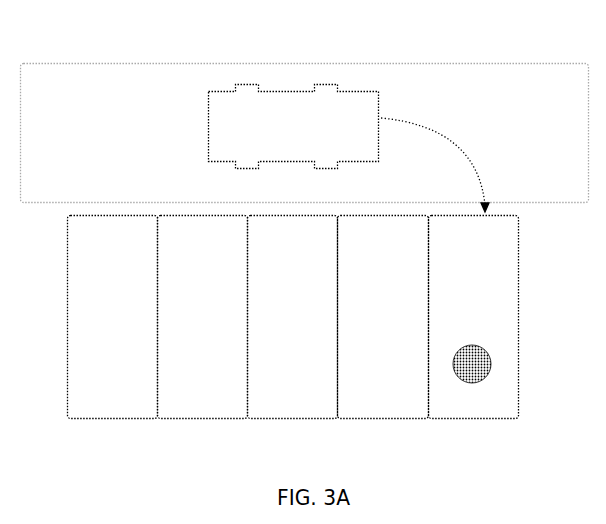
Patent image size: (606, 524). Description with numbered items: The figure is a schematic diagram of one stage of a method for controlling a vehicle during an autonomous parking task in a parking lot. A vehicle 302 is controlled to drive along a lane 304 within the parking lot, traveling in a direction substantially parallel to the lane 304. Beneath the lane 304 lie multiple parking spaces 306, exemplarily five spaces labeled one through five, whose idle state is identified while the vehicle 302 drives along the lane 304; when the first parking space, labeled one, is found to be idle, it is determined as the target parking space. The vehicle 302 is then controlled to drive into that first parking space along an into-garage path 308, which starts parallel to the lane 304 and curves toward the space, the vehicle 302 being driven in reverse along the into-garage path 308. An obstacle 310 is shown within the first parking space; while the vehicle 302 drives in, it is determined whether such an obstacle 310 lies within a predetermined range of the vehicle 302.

The vehicle 302 is at (285, 91).
The lane 304 is at (503, 63).
The parking spaces 306 is at (519, 318).
The into-garage path 308 is at (455, 141).
The obstacle 310 is at (490, 361).